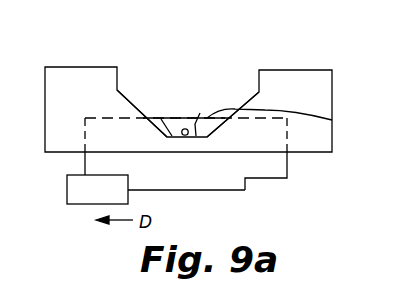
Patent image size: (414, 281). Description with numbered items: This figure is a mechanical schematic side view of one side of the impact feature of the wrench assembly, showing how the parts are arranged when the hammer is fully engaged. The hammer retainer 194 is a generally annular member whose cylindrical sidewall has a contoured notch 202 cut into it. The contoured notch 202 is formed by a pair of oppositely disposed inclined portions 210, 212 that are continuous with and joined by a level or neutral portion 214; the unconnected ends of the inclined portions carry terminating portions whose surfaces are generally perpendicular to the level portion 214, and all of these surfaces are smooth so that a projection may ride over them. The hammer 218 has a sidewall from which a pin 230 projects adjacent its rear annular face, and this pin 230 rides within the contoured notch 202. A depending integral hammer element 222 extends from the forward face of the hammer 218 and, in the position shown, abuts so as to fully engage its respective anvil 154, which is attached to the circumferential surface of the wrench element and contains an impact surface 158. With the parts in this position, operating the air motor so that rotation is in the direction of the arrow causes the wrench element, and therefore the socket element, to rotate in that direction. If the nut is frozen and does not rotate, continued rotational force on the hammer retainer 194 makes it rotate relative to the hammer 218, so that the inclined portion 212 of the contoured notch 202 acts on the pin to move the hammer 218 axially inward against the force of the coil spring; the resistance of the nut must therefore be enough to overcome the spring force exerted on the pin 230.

The hammer retainer 194 is at (315, 95).
The inclined portion 210 is at (130, 100).
The hammer 218 is at (163, 118).
The contoured notch 202 is at (187, 131).
The pin 230 is at (200, 113).
The inclined portion 212 is at (243, 105).
The level portion 214 is at (332, 120).
The anvil 154 is at (78, 190).
The impact surface 158 is at (128, 195).
The hammer element 222 is at (223, 178).